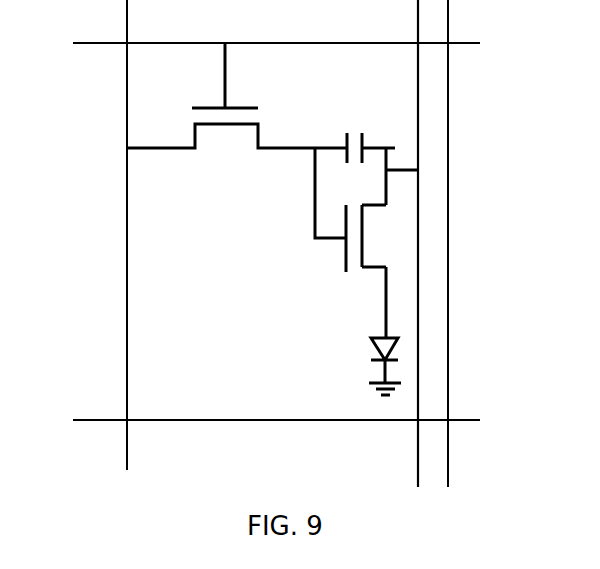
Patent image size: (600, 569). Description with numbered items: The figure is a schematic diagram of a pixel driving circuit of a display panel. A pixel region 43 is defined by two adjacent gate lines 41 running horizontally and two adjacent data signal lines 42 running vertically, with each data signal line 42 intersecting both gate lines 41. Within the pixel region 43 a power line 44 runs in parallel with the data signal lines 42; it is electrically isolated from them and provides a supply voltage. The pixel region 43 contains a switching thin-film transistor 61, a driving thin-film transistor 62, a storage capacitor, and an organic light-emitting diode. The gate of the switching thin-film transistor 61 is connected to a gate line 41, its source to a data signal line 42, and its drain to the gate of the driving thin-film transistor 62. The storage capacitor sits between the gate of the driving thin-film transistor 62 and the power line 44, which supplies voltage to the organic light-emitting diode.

The gate line 41 is at (285, 43).
The data signal line 42 is at (127, 210).
The pixel region 43 is at (148, 313).
The power line 44 is at (418, 313).
The switching thin-film transistor 61 is at (212, 127).
The driving thin-film transistor 62 is at (345, 247).